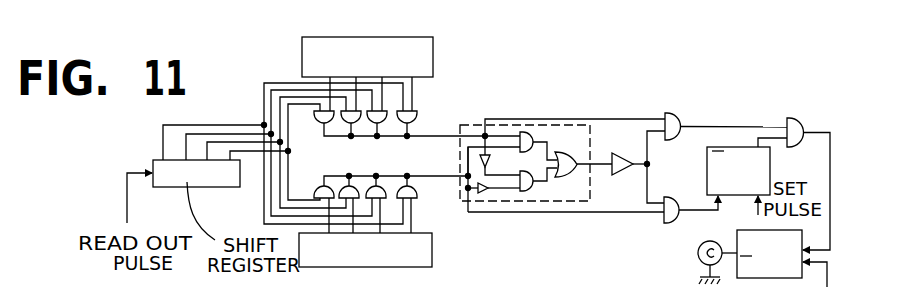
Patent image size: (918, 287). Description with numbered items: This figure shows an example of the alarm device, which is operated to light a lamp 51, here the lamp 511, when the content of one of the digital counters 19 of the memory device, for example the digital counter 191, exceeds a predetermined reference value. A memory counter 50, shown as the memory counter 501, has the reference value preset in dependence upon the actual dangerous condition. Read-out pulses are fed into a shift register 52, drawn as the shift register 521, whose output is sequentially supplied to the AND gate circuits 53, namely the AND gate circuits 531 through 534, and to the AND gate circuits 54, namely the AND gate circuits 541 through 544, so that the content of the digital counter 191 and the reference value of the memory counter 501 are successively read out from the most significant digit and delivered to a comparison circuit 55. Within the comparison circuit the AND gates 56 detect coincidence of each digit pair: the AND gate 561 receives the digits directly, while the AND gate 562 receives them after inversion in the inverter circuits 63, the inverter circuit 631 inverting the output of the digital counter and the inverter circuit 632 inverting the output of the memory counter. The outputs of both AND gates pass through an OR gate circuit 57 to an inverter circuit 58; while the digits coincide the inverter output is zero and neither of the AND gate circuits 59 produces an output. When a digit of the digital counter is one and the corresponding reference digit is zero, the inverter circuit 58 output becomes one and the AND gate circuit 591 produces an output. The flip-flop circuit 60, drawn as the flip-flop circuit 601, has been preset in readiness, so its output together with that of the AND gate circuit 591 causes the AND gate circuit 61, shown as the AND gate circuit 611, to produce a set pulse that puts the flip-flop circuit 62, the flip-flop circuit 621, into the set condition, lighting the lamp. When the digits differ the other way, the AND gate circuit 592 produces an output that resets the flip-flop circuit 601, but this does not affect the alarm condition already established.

The digital counter 191 is at (433, 67).
The digital counter 19 is at (388, 74).
The memory counter 501 is at (432, 257).
The memory counter 50 is at (385, 232).
The shift register 521 is at (209, 179).
The shift register 52 is at (222, 170).
The AND gate circuit 531 is at (415, 114).
The AND gate circuit 534 is at (320, 124).
The AND gate circuits 53 is at (408, 126).
The AND gate circuit 541 is at (411, 187).
The AND gate circuit 544 is at (328, 187).
The AND gate circuits 54 is at (391, 176).
The comparison circuit 55 is at (582, 125).
The AND gate 561 is at (525, 131).
The AND gate circuit 562 is at (530, 192).
The AND gates 56 is at (538, 166).
The OR gate circuit 57 is at (578, 156).
The inverter circuit 58 is at (627, 156).
The AND gate circuit 591 is at (677, 119).
The AND gate circuit 592 is at (672, 193).
The AND gate circuits 59 is at (719, 160).
The flip-flop circuit 601 is at (770, 162).
The flip-flop circuit 60 is at (755, 171).
The AND gate circuit 611 is at (795, 119).
The AND gate circuit 61 is at (794, 174).
The flip-flop circuit 621 is at (815, 263).
The flip-flop circuit 62 is at (798, 258).
The inverter circuit 631 is at (500, 165).
The inverter circuit 632 is at (477, 195).
The inverter circuits 63 is at (490, 196).
The lamp 511 is at (698, 258).
The lamp 51 is at (697, 262).